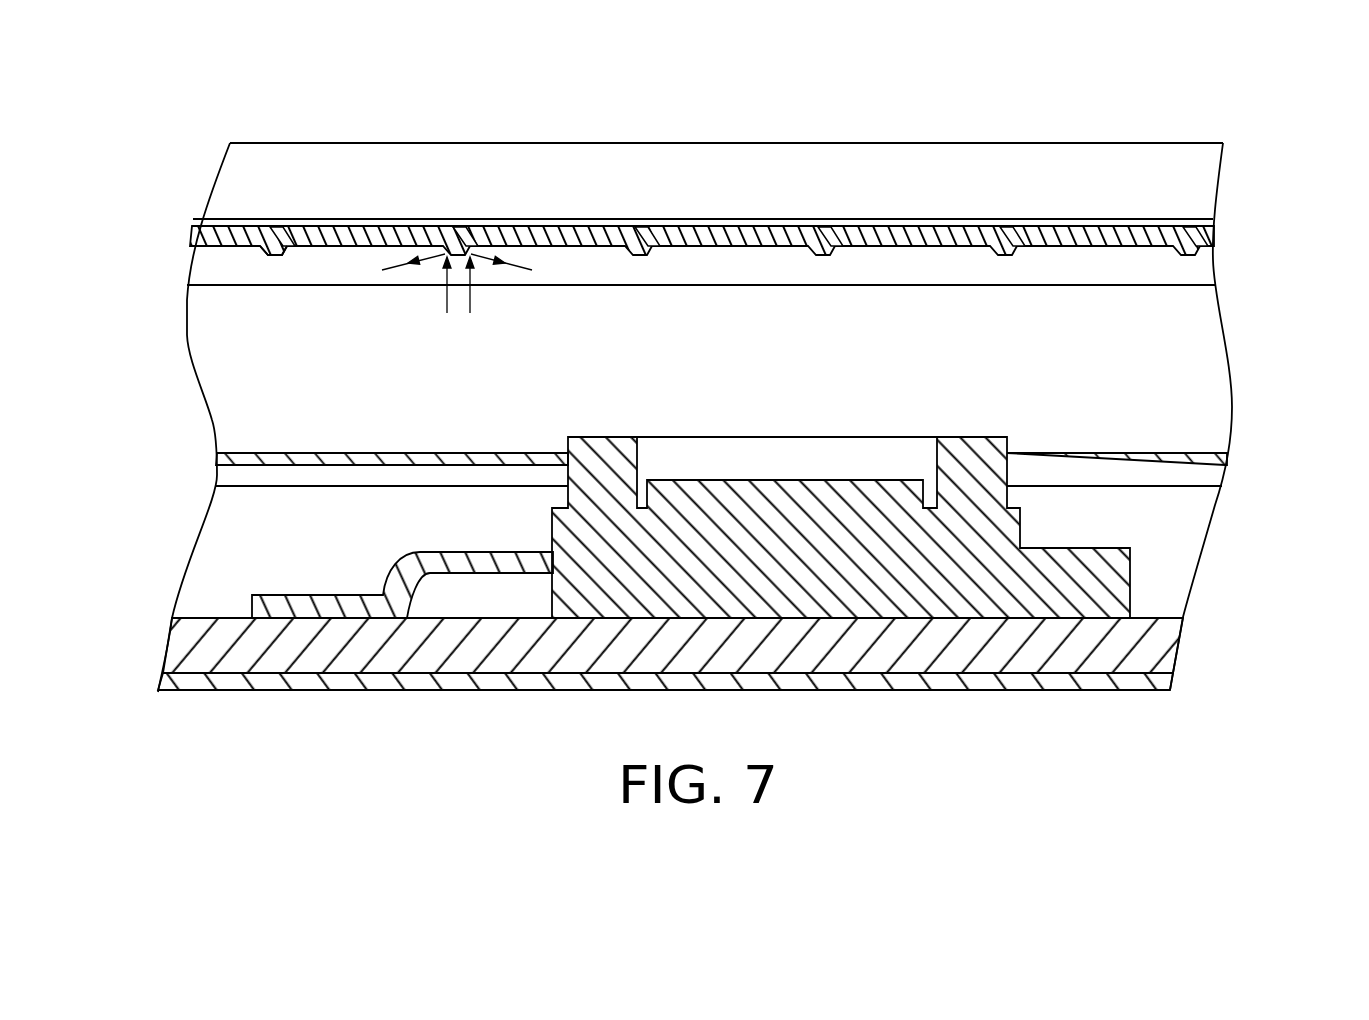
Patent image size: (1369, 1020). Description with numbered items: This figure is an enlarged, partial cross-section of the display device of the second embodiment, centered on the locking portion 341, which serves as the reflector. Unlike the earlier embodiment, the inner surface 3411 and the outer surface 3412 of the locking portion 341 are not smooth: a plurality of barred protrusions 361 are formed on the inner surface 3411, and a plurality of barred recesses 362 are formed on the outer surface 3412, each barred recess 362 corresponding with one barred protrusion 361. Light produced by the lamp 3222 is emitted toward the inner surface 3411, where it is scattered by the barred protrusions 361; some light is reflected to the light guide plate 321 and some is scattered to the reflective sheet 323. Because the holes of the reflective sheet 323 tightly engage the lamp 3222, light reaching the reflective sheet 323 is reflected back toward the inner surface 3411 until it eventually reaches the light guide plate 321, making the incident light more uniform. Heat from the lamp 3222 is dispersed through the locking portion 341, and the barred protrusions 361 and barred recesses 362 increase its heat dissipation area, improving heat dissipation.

The locking portion 341 is at (222, 230).
The inner surface 3411 is at (902, 251).
The outer surface 3412 is at (728, 218).
The barred recess 362 is at (277, 233).
The barred protrusion 361 is at (270, 255).
The light guide plate 321 is at (250, 388).
The reflective sheet 323 is at (308, 458).
The lamp 3222 is at (827, 527).